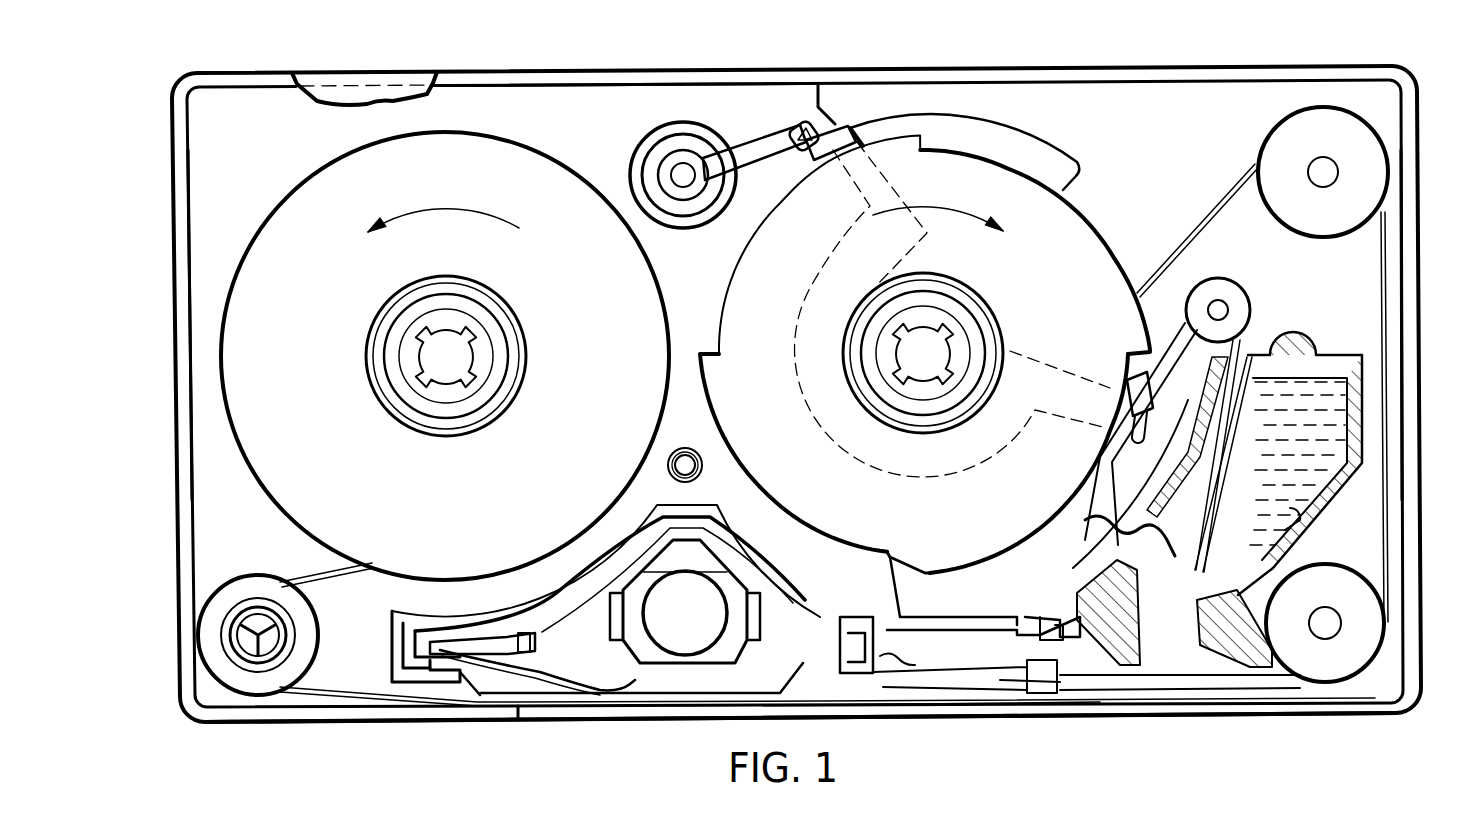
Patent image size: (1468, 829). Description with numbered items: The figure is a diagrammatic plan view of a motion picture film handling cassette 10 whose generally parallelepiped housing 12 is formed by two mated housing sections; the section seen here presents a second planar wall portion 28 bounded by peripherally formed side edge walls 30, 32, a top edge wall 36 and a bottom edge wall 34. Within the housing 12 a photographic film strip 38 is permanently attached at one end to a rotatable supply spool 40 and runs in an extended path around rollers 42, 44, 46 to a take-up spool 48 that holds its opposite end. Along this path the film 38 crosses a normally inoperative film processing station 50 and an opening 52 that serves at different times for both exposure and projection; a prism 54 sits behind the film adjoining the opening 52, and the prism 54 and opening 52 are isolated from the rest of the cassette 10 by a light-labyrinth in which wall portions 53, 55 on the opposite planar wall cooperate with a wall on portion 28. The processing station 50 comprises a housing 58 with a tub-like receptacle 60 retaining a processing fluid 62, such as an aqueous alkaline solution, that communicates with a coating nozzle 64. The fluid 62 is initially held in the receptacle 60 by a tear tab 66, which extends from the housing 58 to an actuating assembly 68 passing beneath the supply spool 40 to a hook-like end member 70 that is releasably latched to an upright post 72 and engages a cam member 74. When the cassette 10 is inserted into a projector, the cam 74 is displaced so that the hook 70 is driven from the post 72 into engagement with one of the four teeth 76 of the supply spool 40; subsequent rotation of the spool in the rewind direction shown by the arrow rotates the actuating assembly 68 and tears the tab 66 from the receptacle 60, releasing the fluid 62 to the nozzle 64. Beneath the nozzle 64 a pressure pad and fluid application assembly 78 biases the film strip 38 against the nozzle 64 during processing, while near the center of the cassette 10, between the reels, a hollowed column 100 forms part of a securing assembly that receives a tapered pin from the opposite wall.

The cassette 10 is at (1432, 580).
The housing 12 is at (1178, 154).
The second planar wall portion 28 is at (410, 92).
The side edge wall 30 is at (172, 298).
The side edge wall 32 is at (1416, 287).
The bottom edge wall 34 is at (430, 712).
The top edge wall 36 is at (572, 70).
The photographic film strip 38 is at (1222, 208).
The supply spool 40 is at (1110, 262).
The roller 42 is at (1292, 210).
The roller 44 is at (1368, 650).
The roller 46 is at (300, 604).
The take-up spool 48 is at (656, 268).
The film processing station 50 is at (1248, 345).
The opening 52 is at (605, 712).
The wall portion 53 is at (508, 602).
The prism 54 is at (700, 643).
The wall portion 55 is at (564, 610).
The housing 58 is at (1362, 395).
The receptacle 60 is at (1297, 526).
The processing fluid 62 is at (1256, 552).
The coating nozzle 64 is at (1152, 648).
The tear tab 66 is at (1165, 348).
The actuating assembly 68 is at (850, 138).
The hook-like end member 70 is at (800, 125).
The upright post 72 is at (838, 118).
The cam member 74 is at (760, 146).
The teeth 76 is at (712, 354).
The pressure pad and fluid application assembly 78 is at (1255, 720).
The hollowed column 100 is at (704, 463).